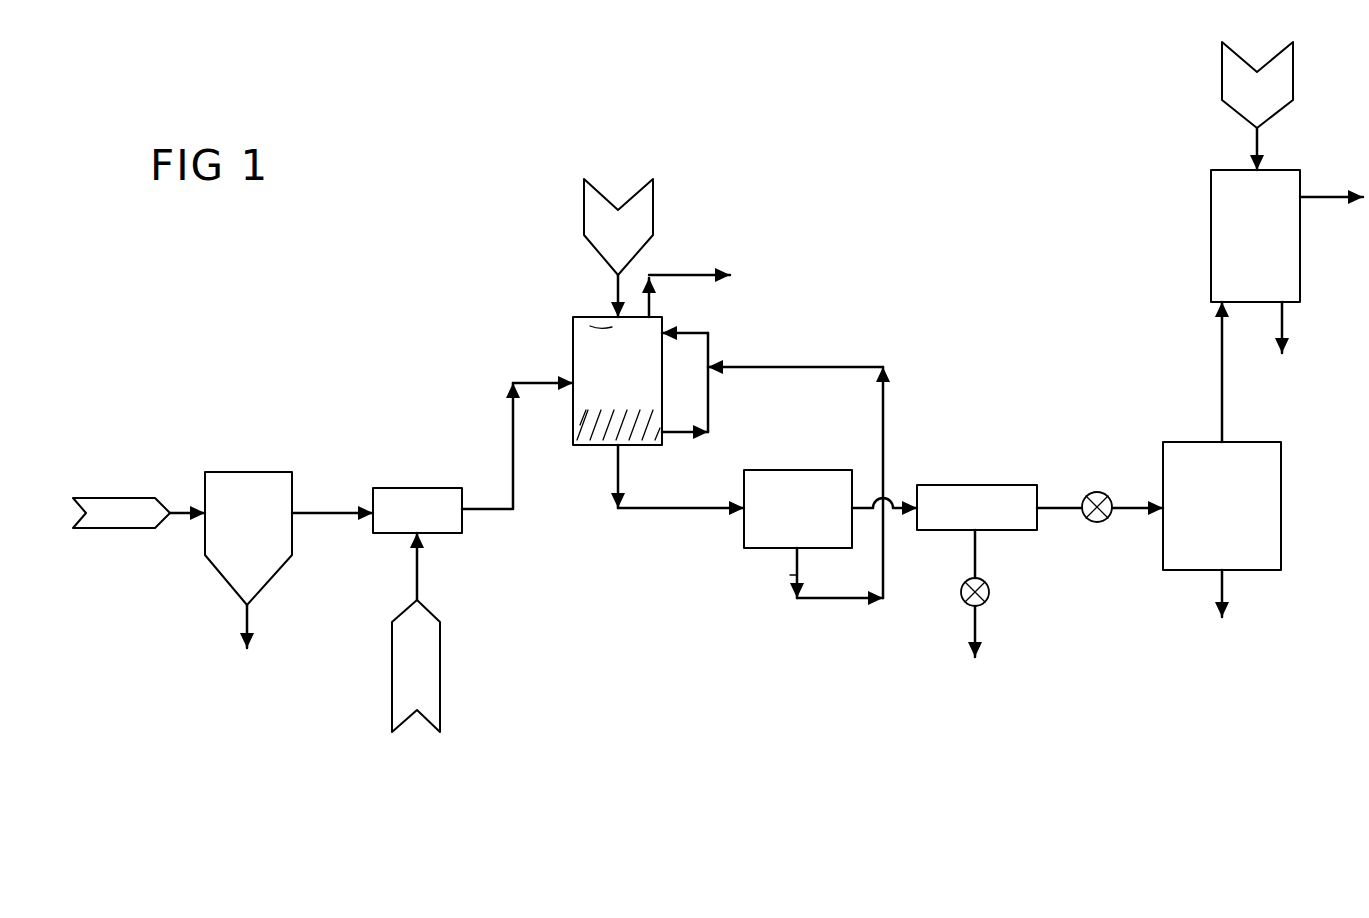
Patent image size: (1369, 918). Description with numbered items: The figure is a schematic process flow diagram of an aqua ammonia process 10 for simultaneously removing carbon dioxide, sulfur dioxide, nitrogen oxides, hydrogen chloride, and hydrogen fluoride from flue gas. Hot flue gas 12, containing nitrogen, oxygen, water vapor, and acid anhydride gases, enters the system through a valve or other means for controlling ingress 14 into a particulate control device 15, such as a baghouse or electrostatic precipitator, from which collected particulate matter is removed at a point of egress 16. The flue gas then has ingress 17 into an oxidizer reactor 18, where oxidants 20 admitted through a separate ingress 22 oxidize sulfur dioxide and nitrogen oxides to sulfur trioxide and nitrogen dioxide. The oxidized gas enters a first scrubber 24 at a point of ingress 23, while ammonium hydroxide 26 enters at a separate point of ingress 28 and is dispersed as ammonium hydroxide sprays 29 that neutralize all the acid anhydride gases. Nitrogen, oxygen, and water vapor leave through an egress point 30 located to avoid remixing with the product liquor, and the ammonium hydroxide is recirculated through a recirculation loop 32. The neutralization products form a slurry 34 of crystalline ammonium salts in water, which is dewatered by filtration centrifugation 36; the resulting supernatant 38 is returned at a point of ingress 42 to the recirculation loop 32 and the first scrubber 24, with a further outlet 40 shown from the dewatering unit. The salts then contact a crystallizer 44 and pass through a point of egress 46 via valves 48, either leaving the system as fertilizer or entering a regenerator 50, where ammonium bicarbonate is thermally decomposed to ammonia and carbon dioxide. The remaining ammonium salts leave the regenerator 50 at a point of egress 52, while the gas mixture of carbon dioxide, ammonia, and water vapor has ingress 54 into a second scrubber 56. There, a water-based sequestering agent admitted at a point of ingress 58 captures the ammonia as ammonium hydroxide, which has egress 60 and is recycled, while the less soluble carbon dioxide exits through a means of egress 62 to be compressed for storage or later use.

The process 10 is at (650, 697).
The hot flue gas 12 is at (88, 497).
The means for controlling ingress 14 is at (178, 508).
The particulate control device 15 is at (217, 575).
The point of egress 16 is at (238, 648).
The ingress 17 is at (325, 508).
The oxidizer reactor 18 is at (402, 488).
The oxidants 20 is at (441, 675).
The ingress 22 is at (420, 580).
The point of ingress 23 is at (545, 384).
The first scrubber 24 is at (572, 350).
The ammonium hydroxide 26 is at (614, 200).
The point of ingress 28 is at (610, 292).
The ammonium hydroxide sprays 29 is at (612, 327).
The egress point 30 is at (705, 272).
The recirculation loop 32 is at (710, 398).
The slurry 34 is at (596, 447).
The filtration centrifugation 36 is at (748, 548).
The supernatant 38 is at (795, 600).
The outlet 40 is at (790, 575).
The point of ingress 42 is at (730, 365).
The crystallizer 44 is at (975, 485).
The point of egress 46 is at (968, 660).
The valve 48 is at (963, 600).
The regenerator 50 is at (1160, 560).
The point of egress 52 is at (1215, 618).
The ingress 54 is at (1226, 380).
The second scrubber 56 is at (1208, 260).
The point of ingress 58 is at (1252, 148).
The egress 60 is at (1285, 330).
The means of egress 62 is at (1335, 195).